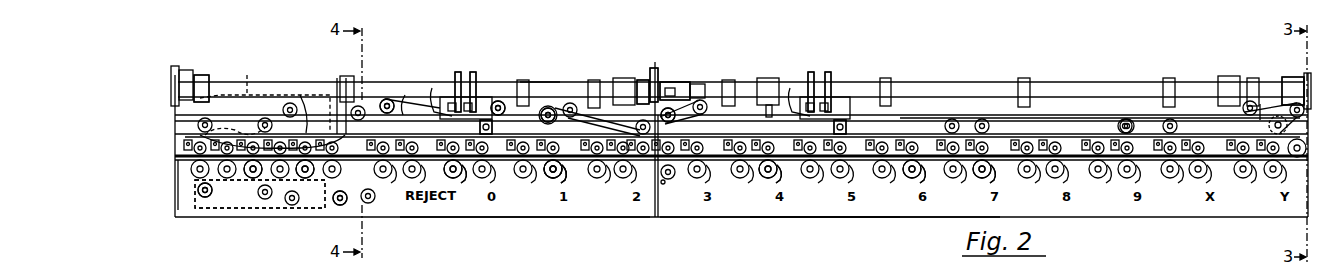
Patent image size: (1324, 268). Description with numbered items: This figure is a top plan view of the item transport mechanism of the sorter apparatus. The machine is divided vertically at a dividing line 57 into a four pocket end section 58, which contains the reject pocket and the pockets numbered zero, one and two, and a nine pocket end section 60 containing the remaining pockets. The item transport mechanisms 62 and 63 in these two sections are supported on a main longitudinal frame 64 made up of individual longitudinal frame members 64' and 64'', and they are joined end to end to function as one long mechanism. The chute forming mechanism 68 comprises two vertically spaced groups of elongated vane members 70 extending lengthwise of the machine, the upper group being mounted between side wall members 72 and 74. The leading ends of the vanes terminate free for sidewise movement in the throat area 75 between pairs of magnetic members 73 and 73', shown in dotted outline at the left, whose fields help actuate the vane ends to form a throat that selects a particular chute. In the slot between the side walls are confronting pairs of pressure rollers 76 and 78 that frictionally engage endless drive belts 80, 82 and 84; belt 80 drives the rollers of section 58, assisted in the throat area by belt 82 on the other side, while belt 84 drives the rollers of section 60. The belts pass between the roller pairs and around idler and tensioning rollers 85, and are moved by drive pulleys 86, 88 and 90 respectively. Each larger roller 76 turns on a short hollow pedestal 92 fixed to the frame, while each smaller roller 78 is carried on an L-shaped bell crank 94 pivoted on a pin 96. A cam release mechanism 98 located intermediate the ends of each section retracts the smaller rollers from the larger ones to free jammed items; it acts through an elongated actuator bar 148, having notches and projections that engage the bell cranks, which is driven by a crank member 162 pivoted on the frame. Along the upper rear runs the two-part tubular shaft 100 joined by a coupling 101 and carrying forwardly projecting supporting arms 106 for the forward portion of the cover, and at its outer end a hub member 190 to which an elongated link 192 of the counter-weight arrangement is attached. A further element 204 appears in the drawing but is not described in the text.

The dividing line 57 is at (642, 77).
The four pocket end section 58 is at (542, 74).
The nine pocket end section 60 is at (942, 78).
The item transport mechanism 62 is at (546, 179).
The item transport mechanism 63 is at (904, 182).
The main longitudinal frame 64 is at (780, 228).
The longitudinal frame member 64' is at (525, 227).
The longitudinal frame member 64'' is at (875, 228).
The chute forming mechanism 68 is at (308, 180).
The vane members 70 is at (355, 170).
The side wall member 72 is at (492, 174).
The magnetic member 73 is at (242, 76).
The magnetic member 73' is at (260, 211).
The side wall member 74 is at (564, 174).
The throat area 75 is at (258, 180).
The pressure rollers 76 is at (456, 180).
The pressure rollers 78 is at (428, 130).
The endless drive belt 80 is at (405, 94).
The endless drive belt 82 is at (375, 200).
The endless drive belt 84 is at (1012, 117).
The idler and tensioning rollers 85 is at (558, 105).
The drive pulley 86 is at (1265, 125).
The drive pulley 88 is at (183, 212).
The drive pulley 90 is at (210, 200).
The hollow pedestal 92 is at (599, 174).
The bell crank 94 is at (378, 111).
The pin 96 is at (512, 117).
The cam release mechanism 98 is at (474, 67).
The tubular shaft 100 is at (497, 95).
The coupling 101 is at (670, 90).
The supporting arms 106 is at (201, 78).
The actuator bar 148 is at (304, 94).
The crank member 162 is at (610, 97).
The hub member 190 is at (665, 83).
The link 192 is at (656, 68).
The stop bar 204 is at (451, 74).